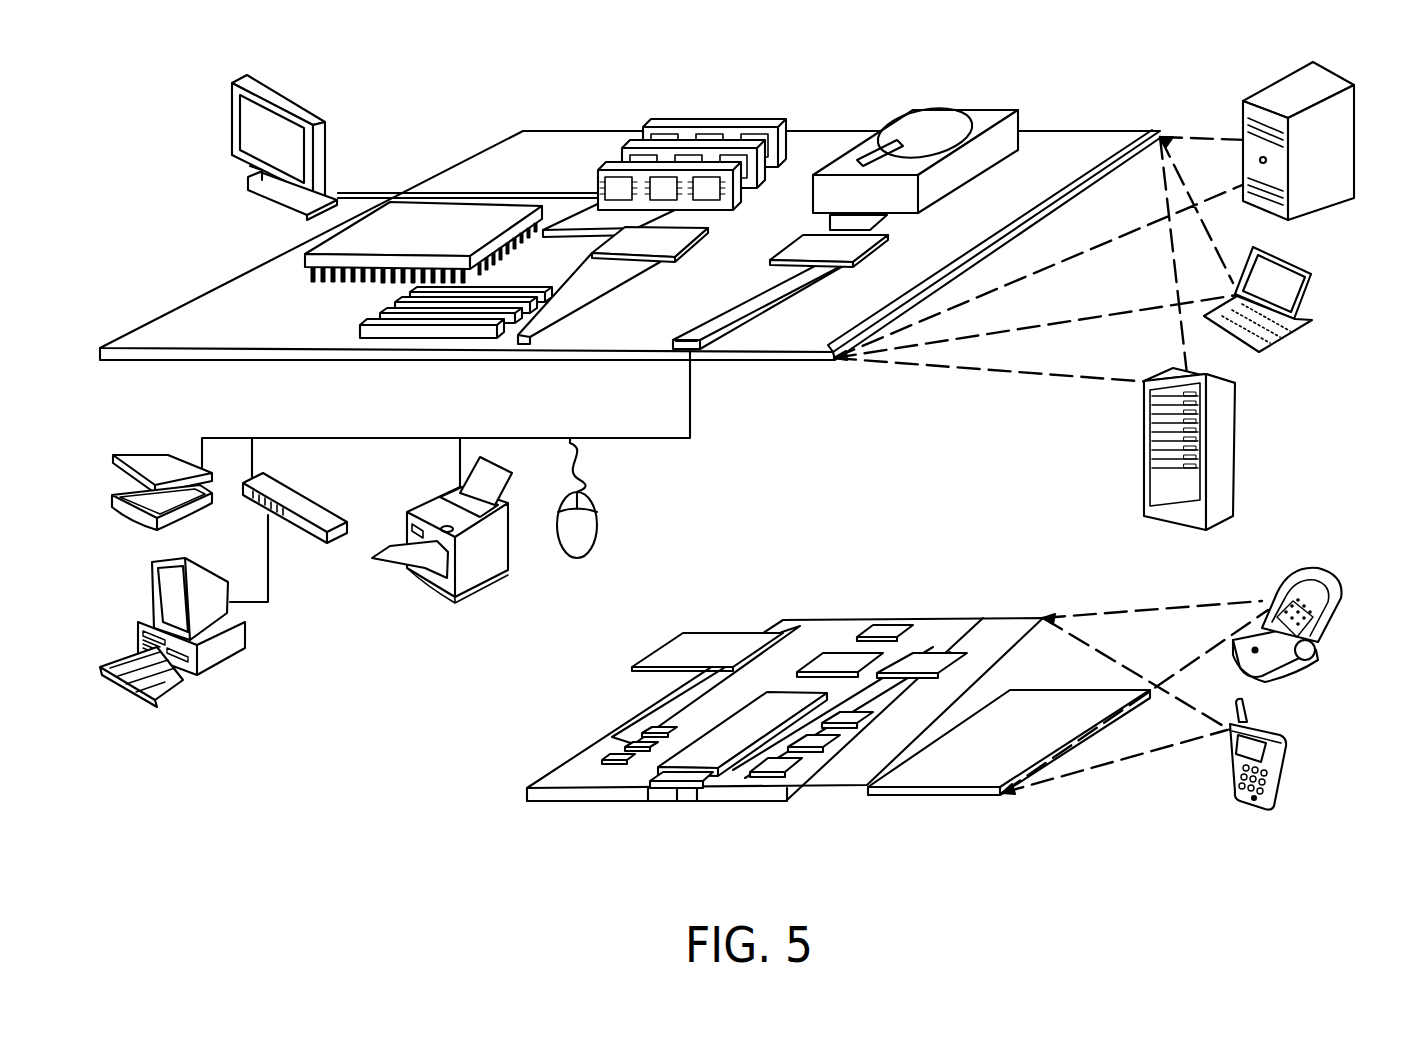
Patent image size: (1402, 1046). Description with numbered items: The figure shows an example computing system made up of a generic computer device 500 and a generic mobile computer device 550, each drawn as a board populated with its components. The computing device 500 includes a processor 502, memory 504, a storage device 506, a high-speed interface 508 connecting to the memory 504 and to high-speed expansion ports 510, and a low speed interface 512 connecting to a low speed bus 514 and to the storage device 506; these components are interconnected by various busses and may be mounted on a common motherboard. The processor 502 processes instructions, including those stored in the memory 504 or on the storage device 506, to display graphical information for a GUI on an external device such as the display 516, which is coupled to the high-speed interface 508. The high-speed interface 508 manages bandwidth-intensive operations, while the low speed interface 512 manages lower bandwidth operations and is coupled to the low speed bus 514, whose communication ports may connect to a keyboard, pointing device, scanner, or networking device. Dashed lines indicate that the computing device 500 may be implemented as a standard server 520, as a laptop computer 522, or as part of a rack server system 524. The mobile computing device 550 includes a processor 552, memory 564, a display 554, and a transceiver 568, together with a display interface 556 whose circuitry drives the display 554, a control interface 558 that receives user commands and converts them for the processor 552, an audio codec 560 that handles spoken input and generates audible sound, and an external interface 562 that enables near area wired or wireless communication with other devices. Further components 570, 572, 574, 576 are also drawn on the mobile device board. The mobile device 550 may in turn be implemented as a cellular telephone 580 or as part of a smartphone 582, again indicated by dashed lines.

The computing device 500 is at (438, 104).
The processor 502 is at (305, 259).
The memory 504 is at (660, 128).
The storage device 506 is at (897, 118).
The high-speed interface 508 is at (628, 242).
The high-speed expansion ports 510 is at (383, 318).
The low speed interface 512 is at (812, 243).
The low speed bus 514 is at (697, 350).
The display 516 is at (237, 80).
The standard server 520 is at (1243, 116).
The laptop computer 522 is at (1312, 273).
The rack server system 524 is at (1148, 478).
The mobile computer device 550 is at (497, 800).
The processor 552 is at (713, 757).
The display 554 is at (965, 775).
The display interface 556 is at (787, 764).
The control interface 558 is at (808, 740).
The audio codec 560 is at (847, 720).
The external interface 562 is at (677, 796).
The memory 564 is at (618, 749).
The transceiver 568 is at (925, 660).
The component 570 is at (888, 624).
The bus rail 572 is at (760, 632).
The component 574 is at (684, 633).
The component 576 is at (842, 660).
The cellular telephone 580 is at (1292, 576).
The smartphone 582 is at (1234, 758).